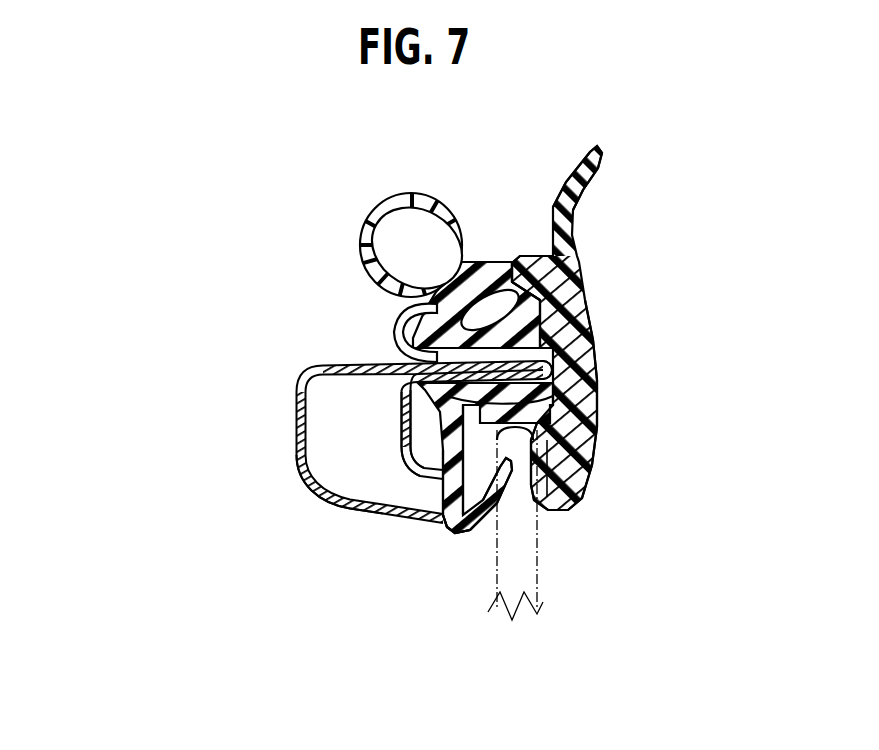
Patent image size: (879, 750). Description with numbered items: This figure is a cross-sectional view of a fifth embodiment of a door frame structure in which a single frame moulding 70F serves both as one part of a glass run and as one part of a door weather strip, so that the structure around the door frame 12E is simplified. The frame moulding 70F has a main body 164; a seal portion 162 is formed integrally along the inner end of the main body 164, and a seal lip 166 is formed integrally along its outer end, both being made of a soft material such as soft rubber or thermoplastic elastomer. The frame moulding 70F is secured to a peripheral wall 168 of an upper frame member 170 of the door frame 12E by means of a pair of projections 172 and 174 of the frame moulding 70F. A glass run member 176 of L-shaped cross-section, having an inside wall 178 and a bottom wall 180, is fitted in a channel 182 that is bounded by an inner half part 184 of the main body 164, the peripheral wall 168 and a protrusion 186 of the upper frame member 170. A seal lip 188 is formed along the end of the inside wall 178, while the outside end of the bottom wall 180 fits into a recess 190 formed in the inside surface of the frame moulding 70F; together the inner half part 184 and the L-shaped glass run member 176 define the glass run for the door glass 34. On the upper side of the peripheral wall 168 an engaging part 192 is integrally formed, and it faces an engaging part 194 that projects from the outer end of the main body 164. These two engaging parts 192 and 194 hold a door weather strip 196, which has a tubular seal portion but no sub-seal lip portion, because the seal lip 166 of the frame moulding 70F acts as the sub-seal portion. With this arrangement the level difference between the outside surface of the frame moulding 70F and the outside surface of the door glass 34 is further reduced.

The door glass 34 is at (537, 572).
The frame moulding 70F is at (588, 257).
The door frame 12E is at (315, 442).
The upper frame member 170 is at (295, 451).
The seal portion 162 is at (570, 517).
The main body 164 is at (594, 365).
The seal lip 166 is at (588, 183).
The peripheral wall 168 is at (580, 341).
The projection 172 is at (566, 328).
The projection 174 is at (552, 368).
The glass run member 176 is at (462, 537).
The inside wall 178 is at (458, 452).
The bottom wall 180 is at (530, 437).
The channel 182 is at (423, 397).
The inner half part 184 is at (567, 470).
The protrusion 186 is at (351, 503).
The seal lip 188 is at (497, 503).
The recess 190 is at (548, 424).
The engaging part 192 is at (393, 328).
The engaging part 194 is at (533, 265).
The door weather strip 196 is at (364, 227).